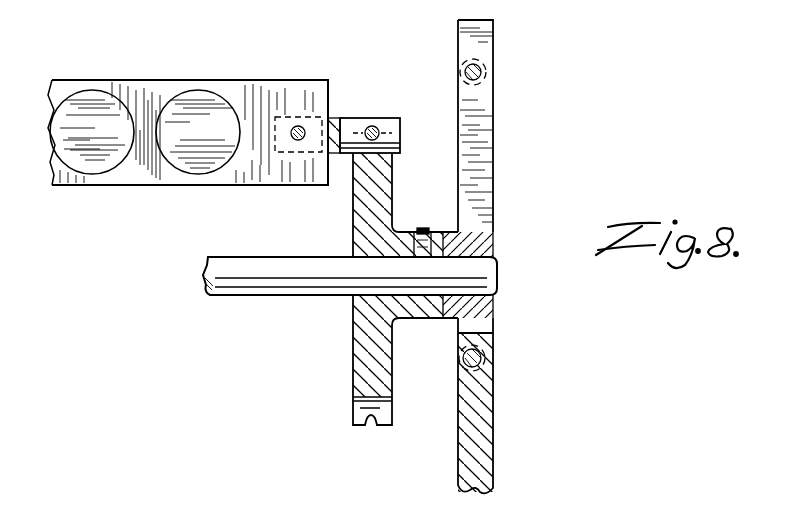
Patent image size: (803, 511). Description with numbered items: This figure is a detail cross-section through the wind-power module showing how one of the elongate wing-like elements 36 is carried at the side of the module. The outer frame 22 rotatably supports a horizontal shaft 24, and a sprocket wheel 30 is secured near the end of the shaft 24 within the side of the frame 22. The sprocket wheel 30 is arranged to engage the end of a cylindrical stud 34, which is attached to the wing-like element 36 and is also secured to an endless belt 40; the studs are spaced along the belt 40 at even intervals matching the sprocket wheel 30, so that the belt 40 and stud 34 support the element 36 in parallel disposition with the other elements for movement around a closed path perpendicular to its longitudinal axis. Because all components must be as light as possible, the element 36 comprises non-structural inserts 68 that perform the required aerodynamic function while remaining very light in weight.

The outer frame 22 is at (478, 473).
The horizontal shaft 24 is at (247, 294).
The sprocket wheel 30 is at (352, 353).
The cylindrical stud 34 is at (357, 118).
The elongate wing-like element 36 is at (158, 80).
The endless belt 40 is at (380, 120).
The non-structural insert 68 is at (186, 163).